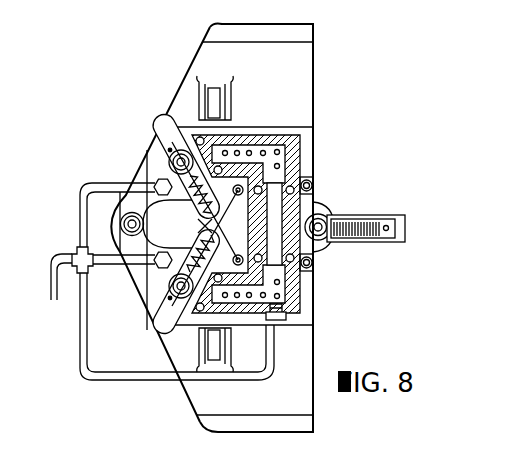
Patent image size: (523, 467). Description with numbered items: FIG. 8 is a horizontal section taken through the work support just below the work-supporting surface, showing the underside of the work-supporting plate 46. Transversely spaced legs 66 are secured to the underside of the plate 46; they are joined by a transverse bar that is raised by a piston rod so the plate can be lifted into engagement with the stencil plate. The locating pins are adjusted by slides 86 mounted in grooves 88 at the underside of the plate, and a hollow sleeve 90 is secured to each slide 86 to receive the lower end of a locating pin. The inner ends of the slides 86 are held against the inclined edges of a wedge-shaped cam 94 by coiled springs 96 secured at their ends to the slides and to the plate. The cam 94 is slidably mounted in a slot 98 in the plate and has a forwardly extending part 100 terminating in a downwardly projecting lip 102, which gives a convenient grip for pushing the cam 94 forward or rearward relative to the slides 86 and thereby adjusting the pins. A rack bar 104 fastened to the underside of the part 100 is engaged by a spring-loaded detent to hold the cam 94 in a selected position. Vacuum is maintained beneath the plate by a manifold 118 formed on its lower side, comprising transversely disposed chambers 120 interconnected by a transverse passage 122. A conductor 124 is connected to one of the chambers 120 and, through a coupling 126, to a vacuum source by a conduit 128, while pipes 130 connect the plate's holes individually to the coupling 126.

The work-supporting plate 46 is at (306, 72).
The legs 66 is at (215, 100).
The slides 86 is at (163, 133).
The grooves 88 is at (168, 107).
The hollow sleeve 90 is at (170, 156).
The wedge-shaped cam 94 is at (203, 226).
The coiled springs 96 is at (188, 180).
The slot 98 is at (152, 213).
The forwardly extending part 100 is at (347, 213).
The downwardly projecting lip 102 is at (405, 223).
The rack bar 104 is at (372, 222).
The manifold 118 is at (298, 150).
The chambers 120 is at (243, 152).
The transverse passage 122 is at (277, 213).
The conductor 124 is at (274, 355).
The coupling 126 is at (80, 249).
The conduit 128 is at (58, 304).
The pipes 130 is at (74, 225).